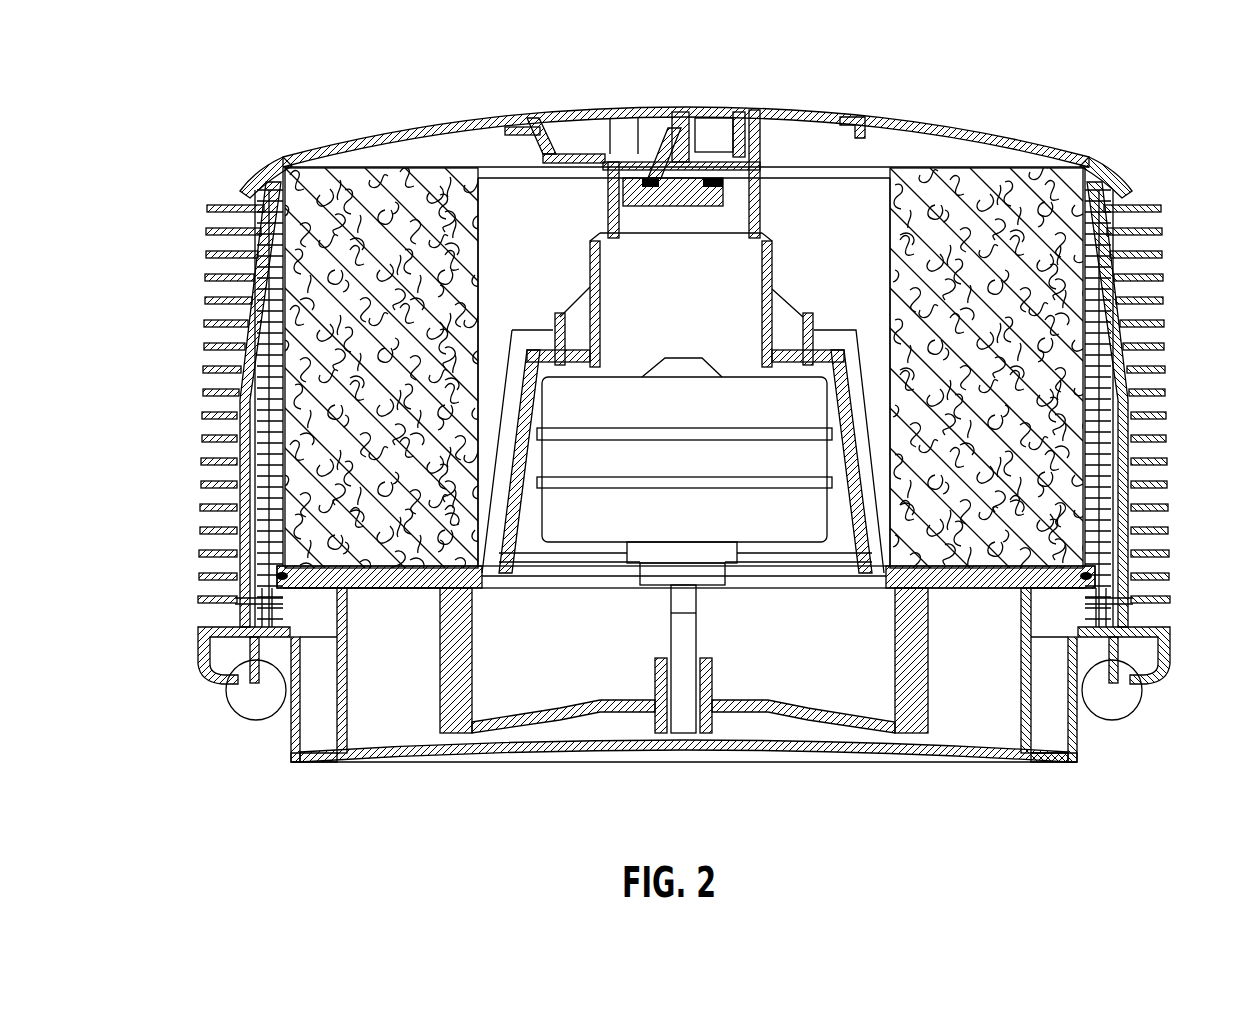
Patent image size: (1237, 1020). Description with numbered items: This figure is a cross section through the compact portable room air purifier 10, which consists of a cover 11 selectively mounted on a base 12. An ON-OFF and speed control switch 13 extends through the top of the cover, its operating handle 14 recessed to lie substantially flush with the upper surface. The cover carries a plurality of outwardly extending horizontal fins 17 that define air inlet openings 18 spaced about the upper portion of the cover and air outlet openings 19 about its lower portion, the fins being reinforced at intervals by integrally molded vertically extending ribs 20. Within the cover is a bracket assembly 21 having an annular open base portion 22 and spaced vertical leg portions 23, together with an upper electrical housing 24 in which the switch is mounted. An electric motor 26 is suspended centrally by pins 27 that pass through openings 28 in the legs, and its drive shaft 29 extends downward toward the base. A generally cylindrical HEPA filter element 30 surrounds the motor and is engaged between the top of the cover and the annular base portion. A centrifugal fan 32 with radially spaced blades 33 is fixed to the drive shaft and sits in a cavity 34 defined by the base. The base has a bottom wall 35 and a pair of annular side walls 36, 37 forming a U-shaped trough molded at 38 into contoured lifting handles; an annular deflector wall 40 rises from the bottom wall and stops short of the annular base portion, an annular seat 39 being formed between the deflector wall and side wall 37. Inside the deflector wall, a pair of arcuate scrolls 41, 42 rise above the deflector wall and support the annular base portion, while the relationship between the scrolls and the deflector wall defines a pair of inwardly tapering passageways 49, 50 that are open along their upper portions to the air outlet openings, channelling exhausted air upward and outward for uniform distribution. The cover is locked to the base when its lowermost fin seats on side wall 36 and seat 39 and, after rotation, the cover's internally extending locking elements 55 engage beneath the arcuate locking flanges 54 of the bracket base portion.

The compact portable room air purifier 10 is at (184, 690).
The cover 11 is at (248, 189).
The base 12 is at (284, 749).
The ON-OFF and speed control switch 13 is at (648, 206).
The operating handle 14 is at (655, 108).
The fins 17 is at (243, 382).
The air inlet openings 18 is at (275, 310).
The air outlet openings 19 is at (258, 605).
The vertically extending ribs 20 is at (236, 480).
The bracket assembly 21 is at (532, 326).
The annular open base portion 22 is at (395, 590).
The leg portions 23 is at (846, 348).
The upper electrical housing 24 is at (775, 258).
The electric motor 26 is at (672, 395).
The pins 27 is at (559, 314).
The openings 28 is at (548, 386).
The drive shaft 29 is at (697, 640).
The HEPA filter element 30 is at (1062, 194).
The centrifugal fan 32 is at (930, 661).
The blades 33 is at (468, 674).
The cavity 34 is at (398, 732).
The bottom wall 35 is at (512, 756).
The annular side wall 36 is at (200, 675).
The annular side wall 37 is at (250, 690).
The molded handle portion 38 is at (260, 722).
The annular seat 39 is at (297, 686).
The annular deflector wall 40 is at (303, 758).
The scroll 41 is at (347, 685).
The scroll 42 is at (1020, 690).
The passageway 49 is at (1043, 725).
The passageway 50 is at (320, 666).
The locking flanges 54 is at (300, 580).
The locking elements 55 is at (282, 577).